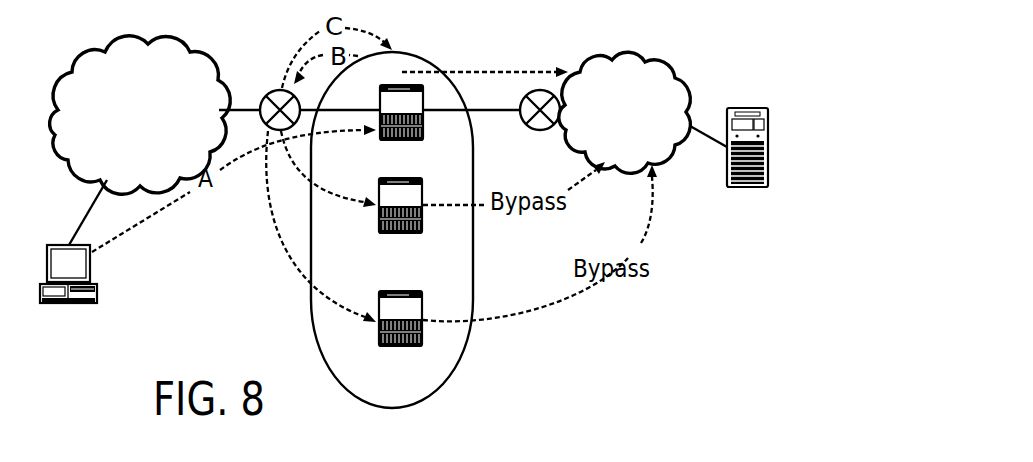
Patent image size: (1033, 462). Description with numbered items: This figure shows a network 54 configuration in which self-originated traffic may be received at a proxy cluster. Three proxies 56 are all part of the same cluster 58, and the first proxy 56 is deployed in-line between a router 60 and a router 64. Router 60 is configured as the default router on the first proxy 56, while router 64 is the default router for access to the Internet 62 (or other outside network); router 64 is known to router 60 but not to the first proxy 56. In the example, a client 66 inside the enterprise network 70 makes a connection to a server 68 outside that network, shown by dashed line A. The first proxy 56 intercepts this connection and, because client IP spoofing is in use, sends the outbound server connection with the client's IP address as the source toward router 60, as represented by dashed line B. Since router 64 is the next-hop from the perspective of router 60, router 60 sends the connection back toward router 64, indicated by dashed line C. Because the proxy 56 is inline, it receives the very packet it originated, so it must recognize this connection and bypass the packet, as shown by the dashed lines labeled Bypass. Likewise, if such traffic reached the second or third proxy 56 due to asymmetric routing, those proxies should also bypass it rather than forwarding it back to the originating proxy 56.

The network 54 is at (478, 32).
The proxy 56 is at (403, 234).
The cluster 58 is at (445, 395).
The router 60 is at (277, 89).
The Internet 62 is at (633, 142).
The router 64 is at (536, 131).
The client 66 is at (68, 290).
The server 68 is at (747, 166).
The enterprise network 70 is at (157, 165).